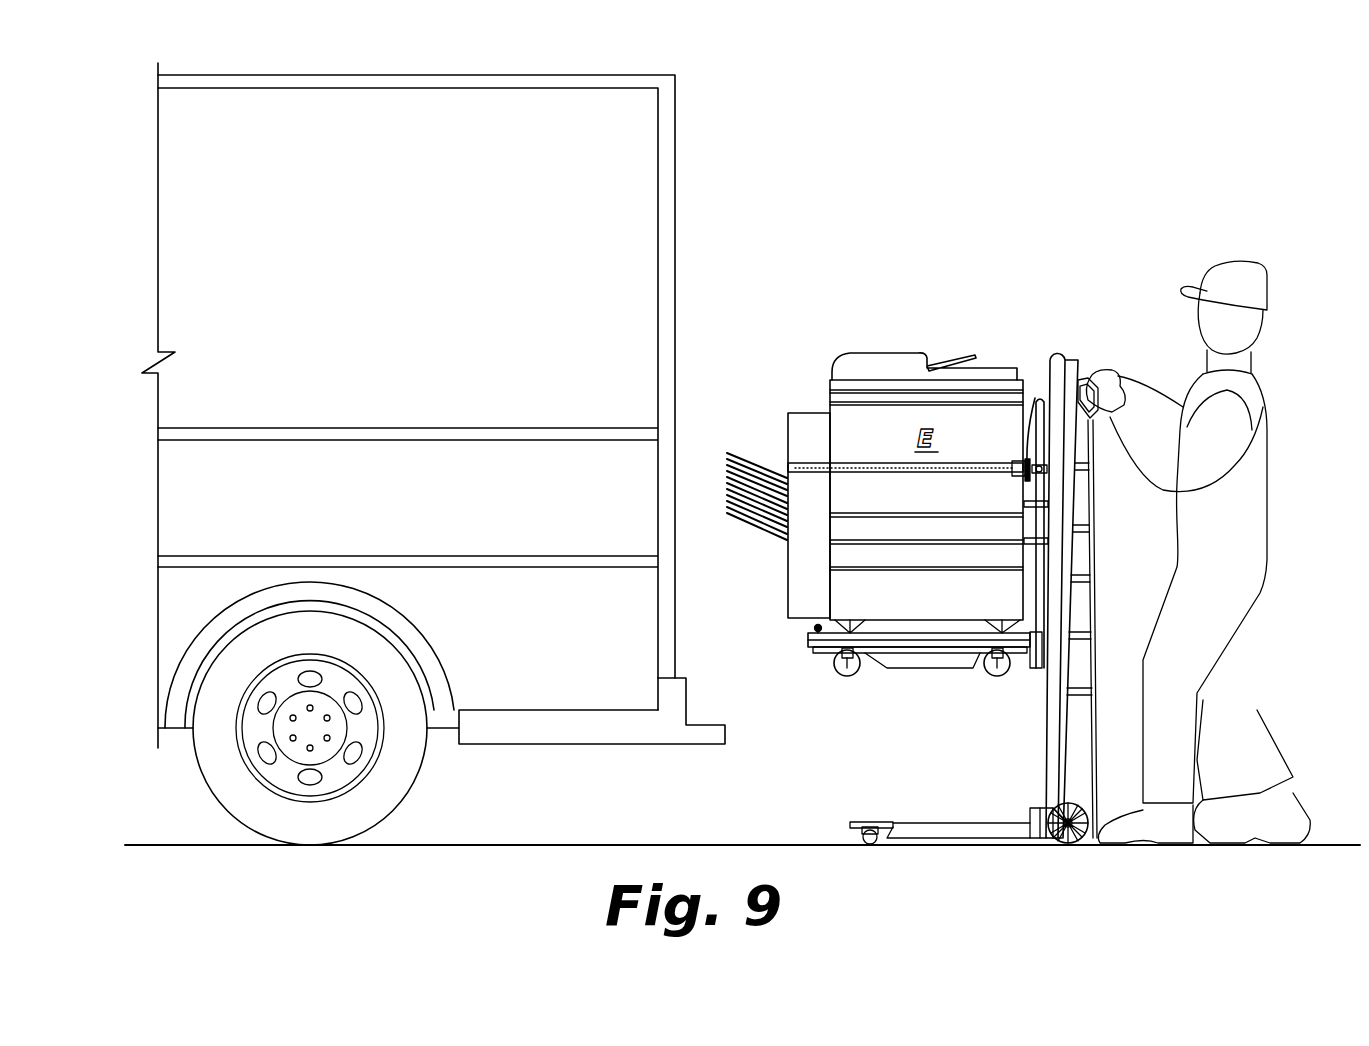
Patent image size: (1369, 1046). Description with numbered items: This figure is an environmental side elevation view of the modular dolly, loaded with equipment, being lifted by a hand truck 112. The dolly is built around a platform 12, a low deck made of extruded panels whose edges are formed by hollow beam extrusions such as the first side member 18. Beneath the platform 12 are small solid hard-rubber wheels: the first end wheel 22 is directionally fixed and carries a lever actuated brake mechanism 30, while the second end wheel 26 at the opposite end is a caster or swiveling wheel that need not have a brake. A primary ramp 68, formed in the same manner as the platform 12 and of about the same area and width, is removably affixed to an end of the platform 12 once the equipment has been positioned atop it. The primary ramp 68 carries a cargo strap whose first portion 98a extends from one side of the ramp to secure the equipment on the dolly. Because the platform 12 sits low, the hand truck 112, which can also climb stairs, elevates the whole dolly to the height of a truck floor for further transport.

The first portion of the cargo strap 98a is at (815, 462).
The primary ramp 68 is at (1002, 490).
The platform 12 is at (881, 631).
The first side member 18 is at (976, 642).
The first end wheel 22 is at (846, 678).
The second end wheel 26 is at (994, 677).
The lever actuated brake mechanism 30 is at (826, 650).
The hand truck 112 is at (1043, 857).